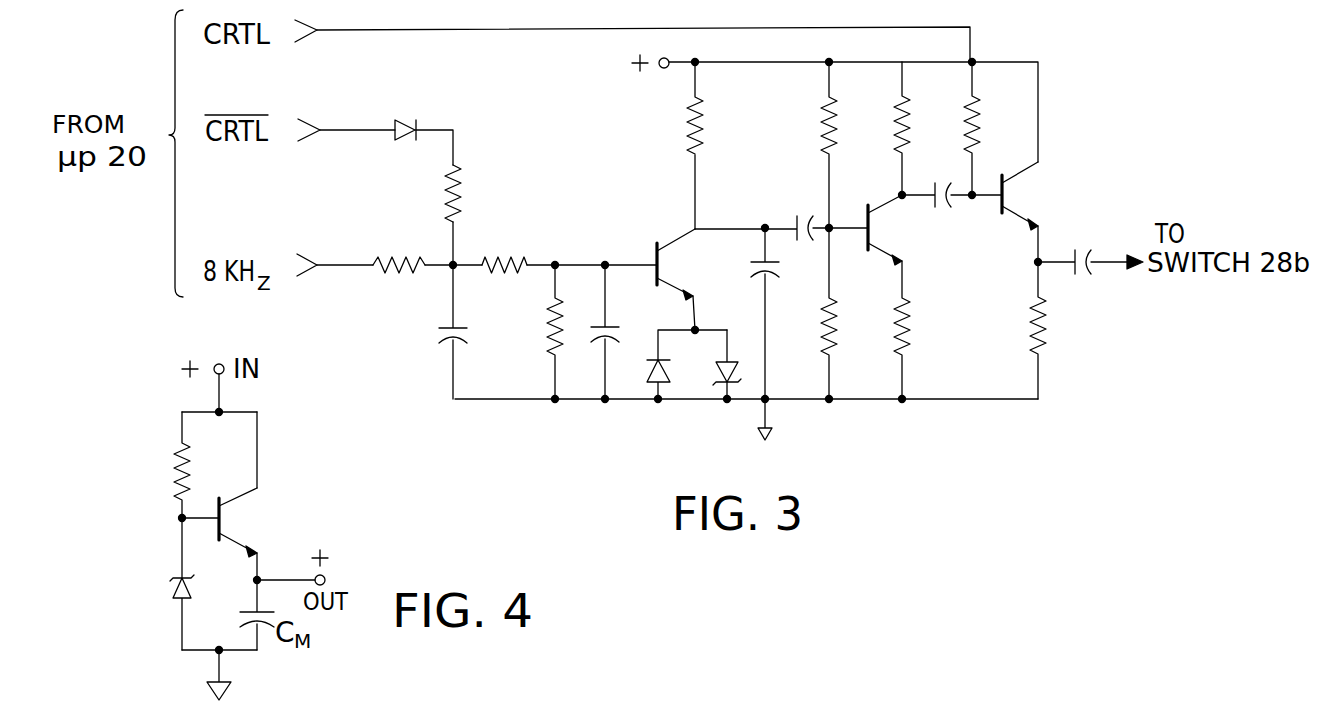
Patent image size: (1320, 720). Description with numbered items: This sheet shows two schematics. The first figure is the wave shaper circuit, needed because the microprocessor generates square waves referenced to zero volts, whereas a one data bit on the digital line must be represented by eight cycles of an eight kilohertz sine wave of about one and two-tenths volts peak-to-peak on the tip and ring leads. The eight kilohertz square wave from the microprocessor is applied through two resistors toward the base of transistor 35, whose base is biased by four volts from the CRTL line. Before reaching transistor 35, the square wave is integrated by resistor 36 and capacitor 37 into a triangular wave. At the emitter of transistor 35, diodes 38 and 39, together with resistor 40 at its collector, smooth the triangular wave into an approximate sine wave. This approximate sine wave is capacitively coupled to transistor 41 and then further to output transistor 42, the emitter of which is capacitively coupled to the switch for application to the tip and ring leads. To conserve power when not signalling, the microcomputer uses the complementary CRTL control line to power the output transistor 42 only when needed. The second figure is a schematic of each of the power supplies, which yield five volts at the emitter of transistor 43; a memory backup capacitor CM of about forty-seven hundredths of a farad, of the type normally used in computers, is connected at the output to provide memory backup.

In FIG. 3, the transistor 35 is at (650, 249).
In FIG. 3, the resistor 36 is at (408, 278).
In FIG. 3, the capacitor 37 is at (440, 338).
In FIG. 3, the diode 38 is at (650, 374).
In FIG. 3, the diode 39 is at (718, 374).
In FIG. 3, the resistor 40 is at (693, 125).
In FIG. 3, the transistor 41 is at (866, 212).
In FIG. 3, the output transistor 42 is at (1000, 200).
In FIG. 4, the transistor 43 is at (222, 516).